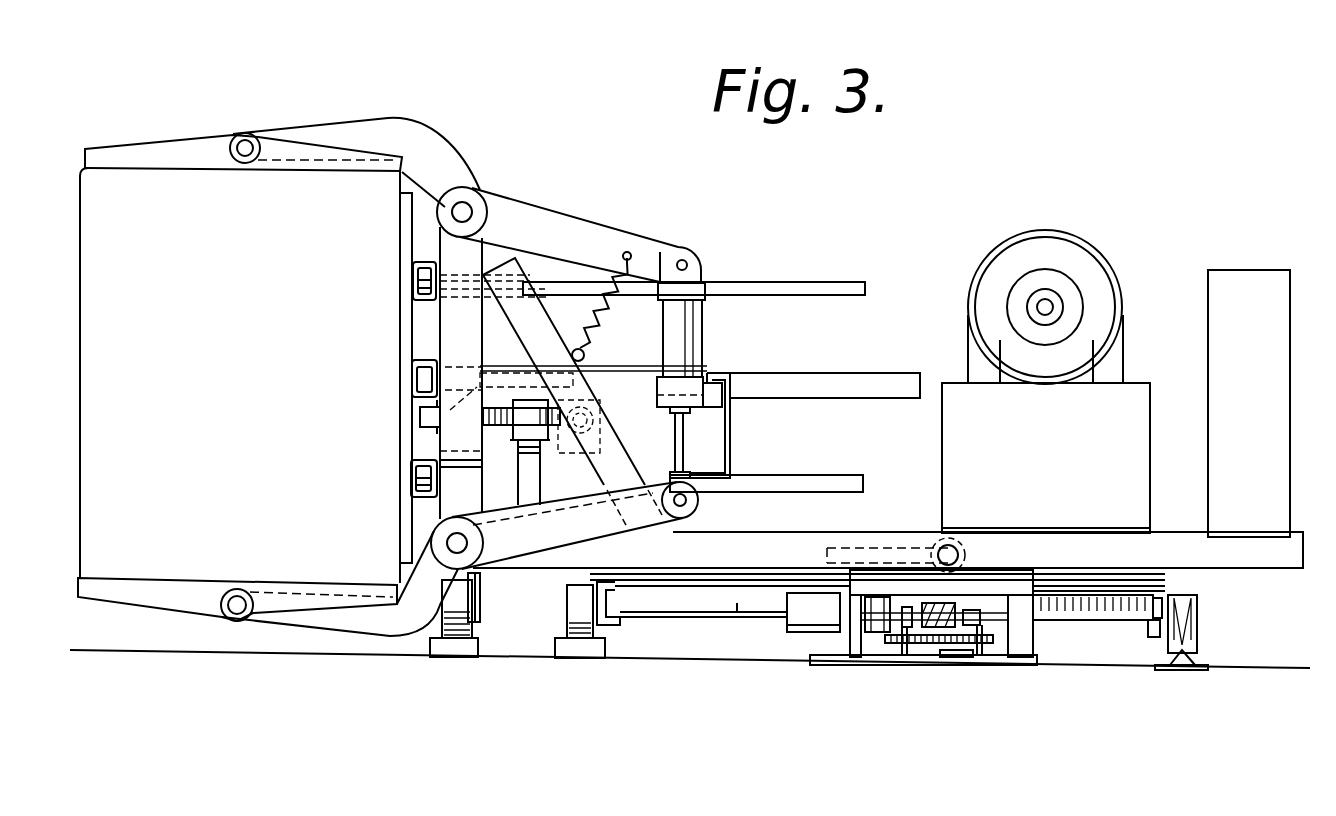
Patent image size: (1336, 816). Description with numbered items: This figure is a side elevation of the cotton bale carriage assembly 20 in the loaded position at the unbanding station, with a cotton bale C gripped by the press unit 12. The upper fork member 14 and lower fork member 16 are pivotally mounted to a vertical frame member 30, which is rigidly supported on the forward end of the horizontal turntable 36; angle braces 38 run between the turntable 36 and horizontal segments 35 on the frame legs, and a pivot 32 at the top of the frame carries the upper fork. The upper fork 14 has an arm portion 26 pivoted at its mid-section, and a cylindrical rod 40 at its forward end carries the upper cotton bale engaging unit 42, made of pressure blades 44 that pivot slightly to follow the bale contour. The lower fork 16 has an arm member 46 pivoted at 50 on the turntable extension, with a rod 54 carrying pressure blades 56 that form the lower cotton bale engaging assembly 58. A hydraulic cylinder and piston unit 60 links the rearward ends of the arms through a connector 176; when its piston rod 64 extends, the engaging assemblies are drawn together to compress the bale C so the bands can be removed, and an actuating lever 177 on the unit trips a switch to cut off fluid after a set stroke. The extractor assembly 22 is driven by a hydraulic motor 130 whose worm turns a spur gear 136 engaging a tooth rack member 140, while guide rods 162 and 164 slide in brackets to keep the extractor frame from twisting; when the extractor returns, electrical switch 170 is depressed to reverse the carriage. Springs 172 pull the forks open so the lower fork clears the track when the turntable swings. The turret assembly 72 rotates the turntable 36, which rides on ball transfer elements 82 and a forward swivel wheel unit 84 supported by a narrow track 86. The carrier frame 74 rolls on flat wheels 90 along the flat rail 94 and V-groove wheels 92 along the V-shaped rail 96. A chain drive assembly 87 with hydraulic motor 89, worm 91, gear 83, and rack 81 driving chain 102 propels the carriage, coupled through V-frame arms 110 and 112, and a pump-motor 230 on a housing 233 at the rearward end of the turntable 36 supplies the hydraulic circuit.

The press unit 12 is at (538, 183).
The upper fork member 14 is at (462, 146).
The lower fork member 16 is at (368, 640).
The carriage assembly 20 is at (1170, 520).
The extractor assembly 22 is at (612, 405).
The arm portion 26 is at (410, 122).
The vertical frame member 30 is at (488, 341).
The pivot 32 is at (465, 198).
The horizontal segment 35 is at (535, 298).
The turntable 36 is at (1070, 552).
The angle brace 38 is at (622, 470).
The cylindrical rod 40 is at (248, 140).
The upper cotton bale engaging unit 42 is at (230, 110).
The pressure blades 44 is at (185, 153).
The arm member 46 is at (583, 537).
The pivot 50 is at (448, 541).
The rod 54 is at (238, 614).
The pressure blades 56 is at (170, 588).
The lower cotton bale engaging assembly 58 is at (183, 660).
The hydraulic cylinder and piston unit 60 is at (710, 336).
The piston rod 64 is at (688, 437).
The turret assembly 72 is at (975, 556).
The carrier frame 74 is at (695, 607).
The rack 81 is at (961, 669).
The ball transfer elements 82 is at (595, 573).
The gear 83 is at (917, 632).
The swivel wheel unit 84 is at (488, 602).
The narrow track 86 is at (467, 655).
The chain drive assembly 87 is at (845, 673).
The hydraulic motor 89 is at (787, 635).
The wheels 90 is at (566, 625).
The worm 91 is at (943, 622).
The wheels 92 is at (1199, 638).
The flat surface rail 94 is at (590, 657).
The V-shaped rail 96 is at (1178, 672).
The chain 102 is at (958, 648).
The arm member 110 is at (1093, 615).
The arm member 112 is at (737, 604).
The hydraulic motor 130 is at (557, 497).
The spur gear 136 is at (410, 415).
The tooth rack member 140 is at (828, 373).
The guide rod 162 is at (804, 283).
The guide rod 164 is at (816, 477).
The electrical switch 170 is at (430, 423).
The spring member 172 is at (607, 325).
The connector 176 is at (726, 386).
The actuating lever 177 is at (732, 452).
The pump-motor 230 is at (1113, 283).
The housing 233 is at (1018, 450).
The cotton bale C is at (72, 361).